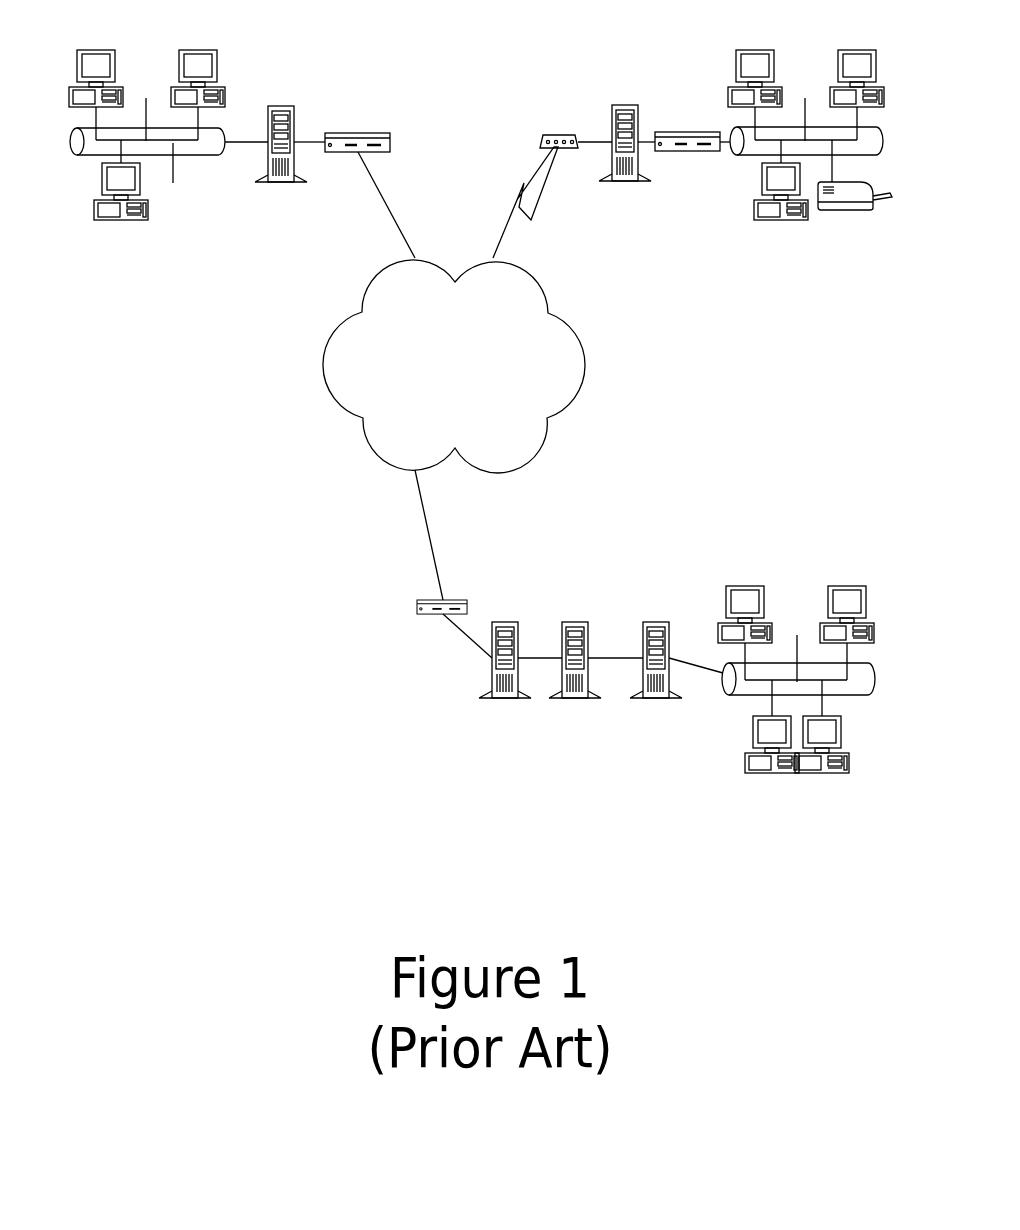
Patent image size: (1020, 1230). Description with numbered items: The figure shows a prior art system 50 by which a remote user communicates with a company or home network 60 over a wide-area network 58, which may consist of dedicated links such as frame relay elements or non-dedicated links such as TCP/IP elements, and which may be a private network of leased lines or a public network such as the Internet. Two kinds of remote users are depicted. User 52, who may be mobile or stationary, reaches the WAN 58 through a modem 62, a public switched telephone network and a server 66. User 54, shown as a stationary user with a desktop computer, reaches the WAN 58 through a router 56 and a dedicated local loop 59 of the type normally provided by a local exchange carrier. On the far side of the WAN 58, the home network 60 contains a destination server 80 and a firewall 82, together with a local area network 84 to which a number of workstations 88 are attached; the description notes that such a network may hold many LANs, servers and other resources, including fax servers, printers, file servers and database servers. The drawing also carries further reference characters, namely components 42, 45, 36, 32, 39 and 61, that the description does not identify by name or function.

The prior art system 50 is at (301, 511).
The first local area network bus 42 is at (153, 140).
The remote user 54 is at (147, 132).
The server 45 is at (290, 122).
The router 56 is at (357, 121).
The dedicated local loop 59 is at (379, 205).
The wide-area network 58 is at (454, 366).
The modem 62 is at (576, 125).
The dial-up connection 39 is at (530, 202).
The server 66 is at (627, 128).
The router 36 is at (692, 126).
The second local area network bus 32 is at (825, 127).
The remote user 52 is at (810, 130).
The router 61 is at (453, 564).
The firewall 82 is at (520, 679).
The destination server 80 is at (596, 679).
The local area network 84 is at (676, 679).
The home network 60 is at (812, 666).
The workstations 88 is at (796, 681).